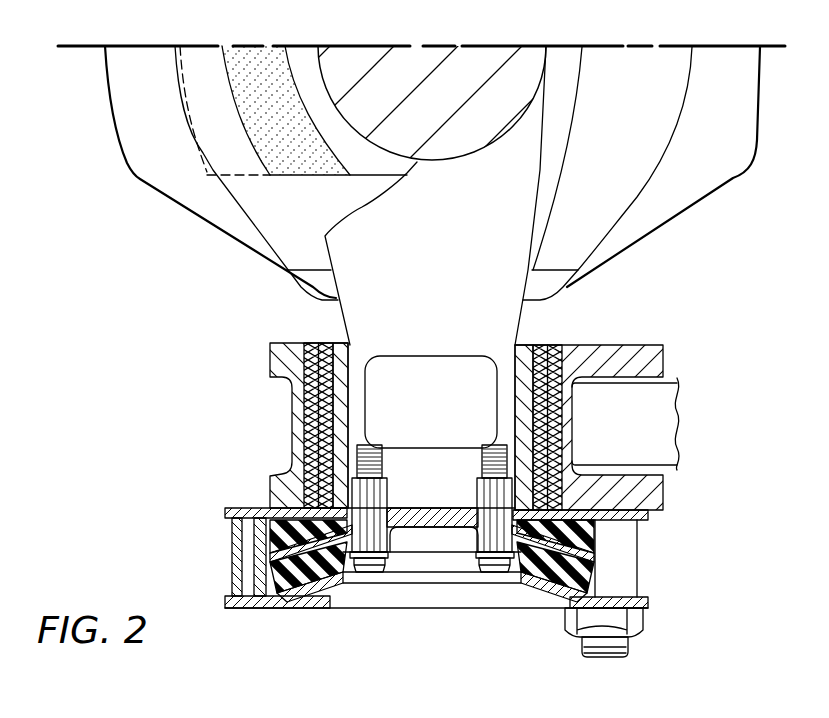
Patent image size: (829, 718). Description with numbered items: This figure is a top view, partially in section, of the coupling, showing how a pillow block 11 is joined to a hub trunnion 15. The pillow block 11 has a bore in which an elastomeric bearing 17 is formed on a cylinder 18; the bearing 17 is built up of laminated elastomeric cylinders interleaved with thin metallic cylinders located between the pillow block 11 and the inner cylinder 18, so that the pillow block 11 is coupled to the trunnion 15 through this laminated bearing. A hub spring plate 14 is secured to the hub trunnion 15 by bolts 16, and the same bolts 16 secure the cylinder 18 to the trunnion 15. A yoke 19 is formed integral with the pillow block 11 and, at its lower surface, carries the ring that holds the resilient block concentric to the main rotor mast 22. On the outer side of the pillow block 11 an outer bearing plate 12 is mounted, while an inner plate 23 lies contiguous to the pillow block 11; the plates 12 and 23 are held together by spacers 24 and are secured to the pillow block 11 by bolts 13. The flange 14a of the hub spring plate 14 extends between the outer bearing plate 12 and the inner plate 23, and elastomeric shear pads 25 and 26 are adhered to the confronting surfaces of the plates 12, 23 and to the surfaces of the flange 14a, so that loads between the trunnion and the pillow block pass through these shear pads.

The pillow block 11 is at (282, 356).
The outer bearing plate 12 is at (306, 594).
The bolts 13 is at (628, 650).
The hub spring plate 14 is at (440, 515).
The flange 14a is at (277, 604).
The hub trunnion 15 is at (451, 281).
The bolts 16 is at (370, 566).
The elastomeric bearing 17 is at (313, 343).
The cylinder 18 is at (343, 352).
The yoke 19 is at (663, 430).
The main rotor mast 22 is at (478, 127).
The inner plate 23 is at (235, 508).
The spacers 24 is at (260, 548).
The elastomeric shear pad 25 is at (297, 610).
The elastomeric shear pad 26 is at (290, 525).